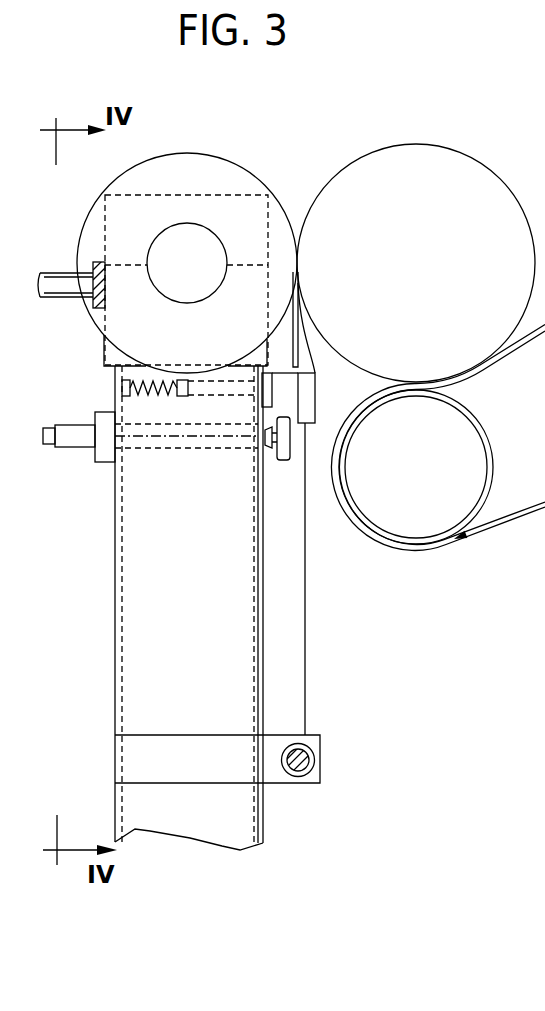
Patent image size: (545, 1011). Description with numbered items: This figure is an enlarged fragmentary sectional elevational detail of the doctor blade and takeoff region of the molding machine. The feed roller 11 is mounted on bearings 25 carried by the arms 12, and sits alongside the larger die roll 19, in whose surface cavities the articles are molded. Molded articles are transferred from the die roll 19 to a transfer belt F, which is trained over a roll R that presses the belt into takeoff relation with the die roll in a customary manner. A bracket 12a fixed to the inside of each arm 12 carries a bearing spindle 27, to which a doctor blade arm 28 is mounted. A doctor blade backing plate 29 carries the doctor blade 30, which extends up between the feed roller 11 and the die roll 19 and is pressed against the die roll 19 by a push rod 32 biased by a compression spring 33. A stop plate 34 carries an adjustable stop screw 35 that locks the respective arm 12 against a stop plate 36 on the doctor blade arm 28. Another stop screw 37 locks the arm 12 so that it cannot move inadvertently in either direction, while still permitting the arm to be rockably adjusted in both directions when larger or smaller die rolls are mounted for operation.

The feed roller 11 is at (207, 160).
The die roll 19 is at (380, 178).
The bearings 25 is at (112, 356).
The stop screw 37 is at (62, 280).
The compression spring 33 is at (164, 461).
The stop screw 35 is at (68, 432).
The stop plate 34 is at (100, 455).
The arms 12 is at (142, 618).
The bracket 12a is at (128, 762).
The bearing spindle 27 is at (316, 764).
The doctor blade arm 28 is at (292, 645).
The doctor blade 30 is at (289, 343).
The doctor blade backing plate 29 is at (310, 385).
The push rod 32 is at (260, 405).
The stop plate 36 is at (287, 462).
The roll R is at (448, 458).
The transfer belt F is at (515, 514).